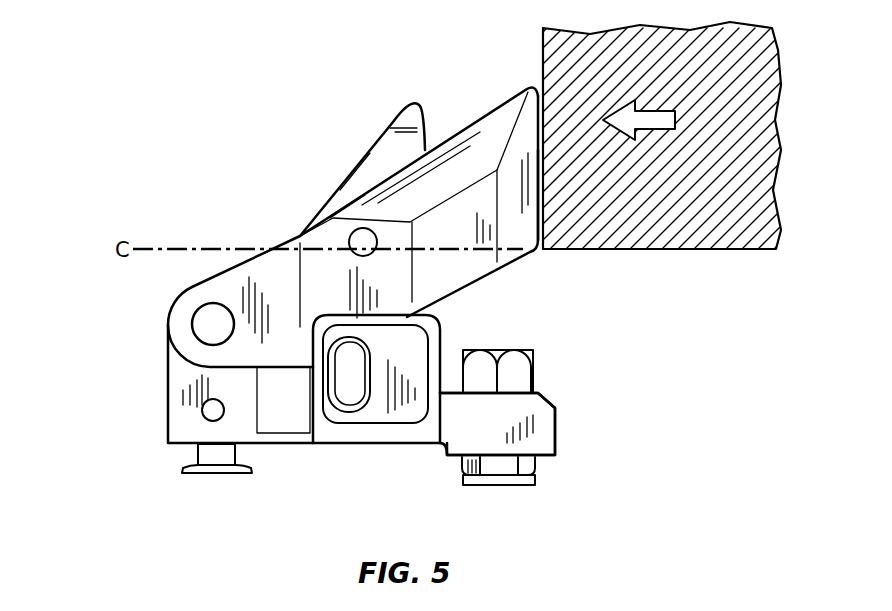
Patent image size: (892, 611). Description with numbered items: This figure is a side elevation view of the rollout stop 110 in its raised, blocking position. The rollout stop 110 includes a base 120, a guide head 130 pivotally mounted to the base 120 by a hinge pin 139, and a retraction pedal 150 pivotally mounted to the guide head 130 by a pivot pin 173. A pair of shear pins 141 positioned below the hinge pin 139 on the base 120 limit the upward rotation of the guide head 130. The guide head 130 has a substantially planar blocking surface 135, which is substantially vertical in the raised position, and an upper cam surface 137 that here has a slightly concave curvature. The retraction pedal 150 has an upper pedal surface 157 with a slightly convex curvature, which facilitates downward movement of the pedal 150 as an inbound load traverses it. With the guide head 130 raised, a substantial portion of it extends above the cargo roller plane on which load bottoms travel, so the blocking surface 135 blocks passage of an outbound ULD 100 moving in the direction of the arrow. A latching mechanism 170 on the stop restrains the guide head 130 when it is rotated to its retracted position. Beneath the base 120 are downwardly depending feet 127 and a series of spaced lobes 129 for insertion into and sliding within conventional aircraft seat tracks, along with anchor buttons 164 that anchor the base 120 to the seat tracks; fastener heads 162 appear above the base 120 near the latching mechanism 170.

The outbound ULD 100 is at (542, 70).
The rollout stop 110 is at (240, 123).
The base 120 is at (547, 418).
The feet 127 is at (212, 465).
The spaced lobes 129 is at (497, 480).
The guide head 130 is at (485, 157).
The blocking surface 135 is at (538, 190).
The upper cam surface 137 is at (348, 205).
The hinge pin 139 is at (212, 323).
The shear pins 141 is at (212, 408).
The retraction pedal 150 is at (395, 140).
The upper pedal surface 157 is at (362, 160).
The fastener heads 162 is at (513, 375).
The anchor buttons 164 is at (533, 467).
The latching mechanism 170 is at (403, 362).
The pivot pin 173 is at (352, 235).